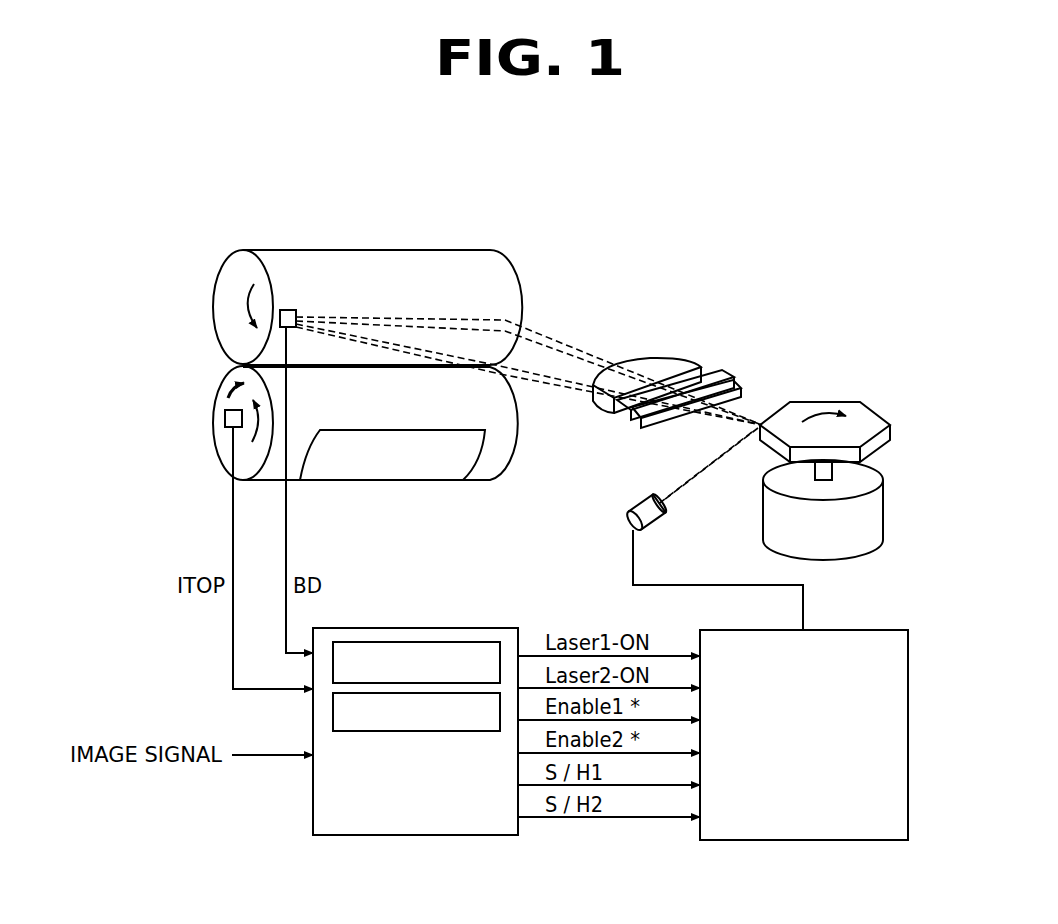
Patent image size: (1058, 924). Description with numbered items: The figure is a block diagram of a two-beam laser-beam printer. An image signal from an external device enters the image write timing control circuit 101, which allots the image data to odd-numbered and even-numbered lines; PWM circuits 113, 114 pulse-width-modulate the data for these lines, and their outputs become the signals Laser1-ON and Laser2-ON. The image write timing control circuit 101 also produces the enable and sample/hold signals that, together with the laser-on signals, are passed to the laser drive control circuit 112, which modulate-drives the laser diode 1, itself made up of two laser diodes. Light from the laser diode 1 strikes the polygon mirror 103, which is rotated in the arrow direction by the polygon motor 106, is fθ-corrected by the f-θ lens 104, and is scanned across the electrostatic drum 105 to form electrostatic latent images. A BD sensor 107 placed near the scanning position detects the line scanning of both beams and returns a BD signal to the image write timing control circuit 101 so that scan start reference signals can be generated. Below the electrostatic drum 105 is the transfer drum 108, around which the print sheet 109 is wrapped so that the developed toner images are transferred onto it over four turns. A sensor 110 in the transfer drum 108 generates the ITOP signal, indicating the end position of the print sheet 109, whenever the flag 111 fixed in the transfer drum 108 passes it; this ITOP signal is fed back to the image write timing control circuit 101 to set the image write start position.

The laser diode 1 is at (660, 519).
The image write timing control circuit 101 is at (378, 738).
The polygon mirror 103 is at (829, 402).
The f-θ lens 104 is at (691, 382).
The electrostatic drum 105 is at (458, 250).
The polygon motor 106 is at (883, 500).
The BD sensor 107 is at (286, 310).
The transfer drum 108 is at (520, 447).
The print sheet 109 is at (403, 481).
The sensor 110 is at (225, 419).
The flag 111 is at (230, 388).
The laser drive control circuit 112 is at (803, 840).
The PWM circuit 113 is at (333, 712).
The PWM circuit 114 is at (424, 642).